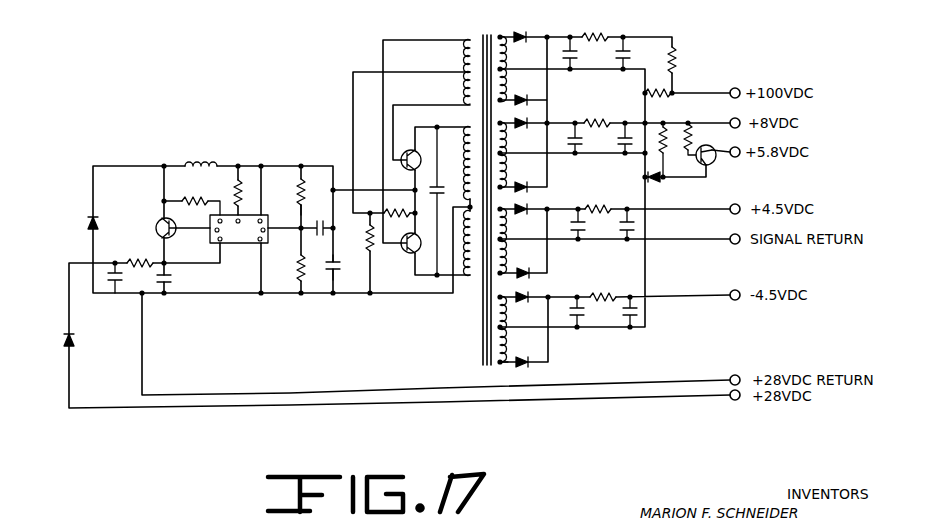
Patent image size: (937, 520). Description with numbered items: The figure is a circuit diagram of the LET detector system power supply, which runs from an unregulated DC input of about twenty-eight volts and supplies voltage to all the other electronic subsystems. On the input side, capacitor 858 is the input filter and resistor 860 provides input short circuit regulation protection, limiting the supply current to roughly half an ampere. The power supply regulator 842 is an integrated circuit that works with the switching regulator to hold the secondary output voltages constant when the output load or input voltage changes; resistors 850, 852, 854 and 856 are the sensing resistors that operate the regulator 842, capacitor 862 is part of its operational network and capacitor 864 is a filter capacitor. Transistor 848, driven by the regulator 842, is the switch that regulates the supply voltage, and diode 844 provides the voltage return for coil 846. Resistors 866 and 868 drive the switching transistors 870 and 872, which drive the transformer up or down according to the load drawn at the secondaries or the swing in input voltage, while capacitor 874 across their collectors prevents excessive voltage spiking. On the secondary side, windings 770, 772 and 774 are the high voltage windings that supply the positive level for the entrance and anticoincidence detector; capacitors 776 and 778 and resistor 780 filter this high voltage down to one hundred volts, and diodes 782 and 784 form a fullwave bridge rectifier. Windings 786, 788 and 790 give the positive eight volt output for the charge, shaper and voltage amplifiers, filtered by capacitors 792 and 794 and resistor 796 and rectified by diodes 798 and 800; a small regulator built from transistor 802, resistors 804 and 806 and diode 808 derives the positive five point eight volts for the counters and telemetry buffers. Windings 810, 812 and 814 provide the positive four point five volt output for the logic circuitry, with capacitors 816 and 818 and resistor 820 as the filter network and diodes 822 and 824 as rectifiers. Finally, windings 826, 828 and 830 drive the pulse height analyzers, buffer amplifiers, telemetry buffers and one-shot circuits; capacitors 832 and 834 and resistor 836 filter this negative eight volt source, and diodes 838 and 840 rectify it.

The secondary transformer winding 770 is at (493, 34).
The secondary transformer winding 772 is at (502, 58).
The secondary transformer winding 774 is at (507, 83).
The capacitor 776 is at (577, 36).
The capacitor 778 is at (632, 35).
The resistor 780 is at (597, 33).
The diode 782 is at (533, 32).
The diode 784 is at (530, 102).
The transformer secondary winding 786 is at (501, 134).
The transformer secondary winding 788 is at (495, 153).
The transformer secondary winding 790 is at (529, 188).
The capacitor 792 is at (594, 120).
The capacitor 794 is at (631, 135).
The resistor 796 is at (611, 133).
The diode 798 is at (530, 121).
The diode 800 is at (534, 174).
The transistor 802 is at (712, 161).
The resistor 804 is at (666, 127).
The resistor 806 is at (693, 130).
The diode 808 is at (663, 183).
The transformer secondary winding 810 is at (503, 222).
The transformer secondary winding 812 is at (503, 247).
The transformer secondary winding 814 is at (496, 288).
The capacitor 816 is at (582, 233).
The capacitor 818 is at (635, 222).
The resistor 820 is at (606, 217).
The diode 822 is at (532, 208).
The diode 824 is at (531, 276).
The transformer secondary winding 826 is at (498, 315).
The transformer secondary winding 828 is at (498, 343).
The transformer secondary winding 830 is at (503, 366).
The capacitor 832 is at (584, 318).
The capacitor 834 is at (641, 320).
The resistor 836 is at (611, 292).
The diode 838 is at (530, 300).
The diode 840 is at (528, 365).
The power supply regulator 842 is at (233, 243).
The diode 844 is at (85, 226).
The coil 846 is at (204, 160).
The transistor 848 is at (156, 230).
The resistor 850 is at (213, 196).
The resistor 852 is at (296, 185).
The resistor 854 is at (292, 191).
The resistor 856 is at (300, 272).
The capacitor 858 is at (124, 283).
The resistor 860 is at (143, 260).
The capacitor 862 is at (323, 205).
The capacitor 864 is at (326, 268).
The resistor 866 is at (363, 270).
The resistor 868 is at (390, 202).
The switching transistor 870 is at (402, 153).
The switching transistor 872 is at (414, 253).
The capacitor 874 is at (439, 192).